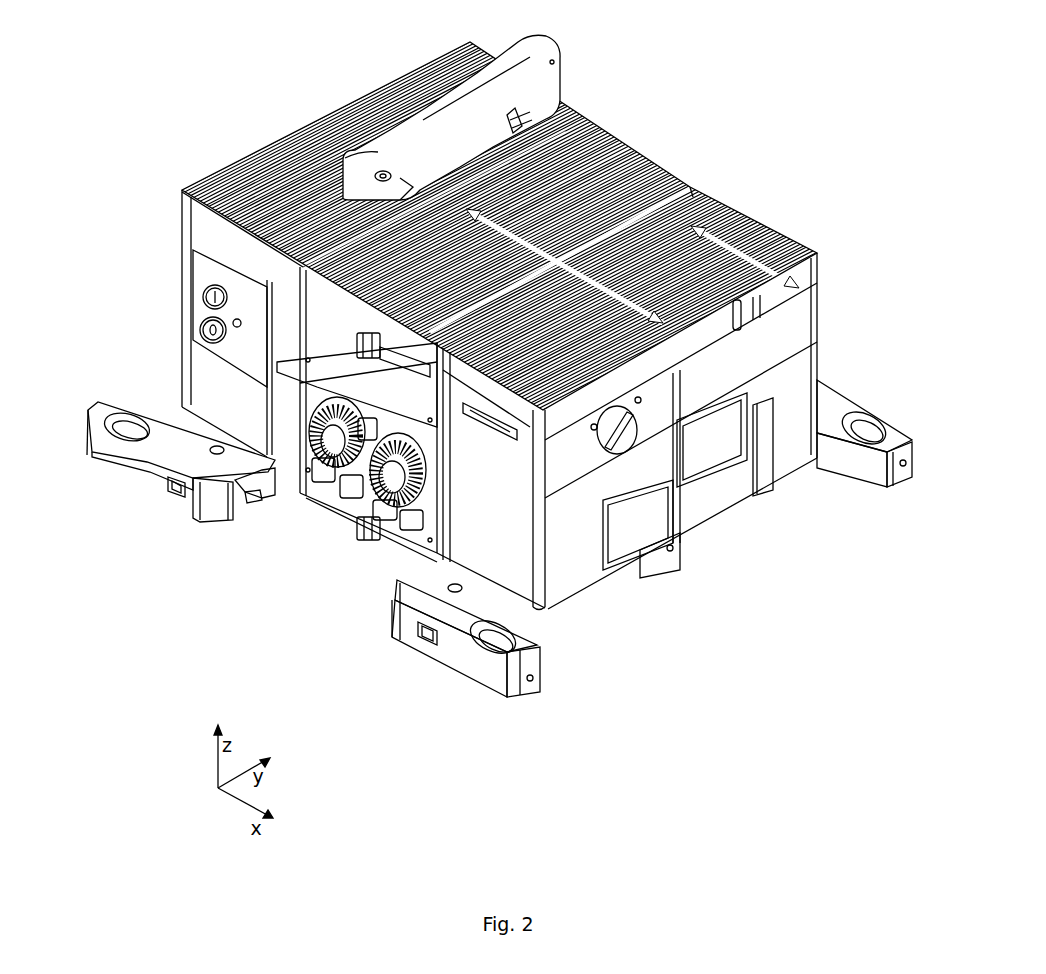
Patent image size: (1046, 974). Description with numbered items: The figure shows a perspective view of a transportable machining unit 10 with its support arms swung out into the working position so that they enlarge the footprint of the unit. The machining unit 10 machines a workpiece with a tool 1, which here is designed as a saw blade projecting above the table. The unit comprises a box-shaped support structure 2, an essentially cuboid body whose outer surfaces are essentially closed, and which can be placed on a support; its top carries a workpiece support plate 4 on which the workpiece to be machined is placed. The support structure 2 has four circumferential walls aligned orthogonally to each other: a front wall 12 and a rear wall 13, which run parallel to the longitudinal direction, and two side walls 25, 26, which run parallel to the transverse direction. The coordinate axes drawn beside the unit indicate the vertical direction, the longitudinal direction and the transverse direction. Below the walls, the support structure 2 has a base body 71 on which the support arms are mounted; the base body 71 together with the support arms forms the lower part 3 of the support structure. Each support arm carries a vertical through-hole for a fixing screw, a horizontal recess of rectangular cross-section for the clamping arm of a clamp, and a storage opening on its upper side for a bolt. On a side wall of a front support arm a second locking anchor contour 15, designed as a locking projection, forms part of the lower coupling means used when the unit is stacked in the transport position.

The tool 1 is at (556, 97).
The box-shaped support structure 2 is at (847, 342).
The lower part of the support structure 3 is at (681, 390).
The base body 71 is at (641, 470).
The workpiece support plate 4 is at (238, 180).
The transportable machining unit 10 is at (788, 117).
The front wall 12 is at (217, 390).
The rear wall 13 is at (690, 152).
The second locking anchor contour 15 is at (262, 500).
The side wall 25 is at (283, 108).
The side wall 26 is at (792, 443).